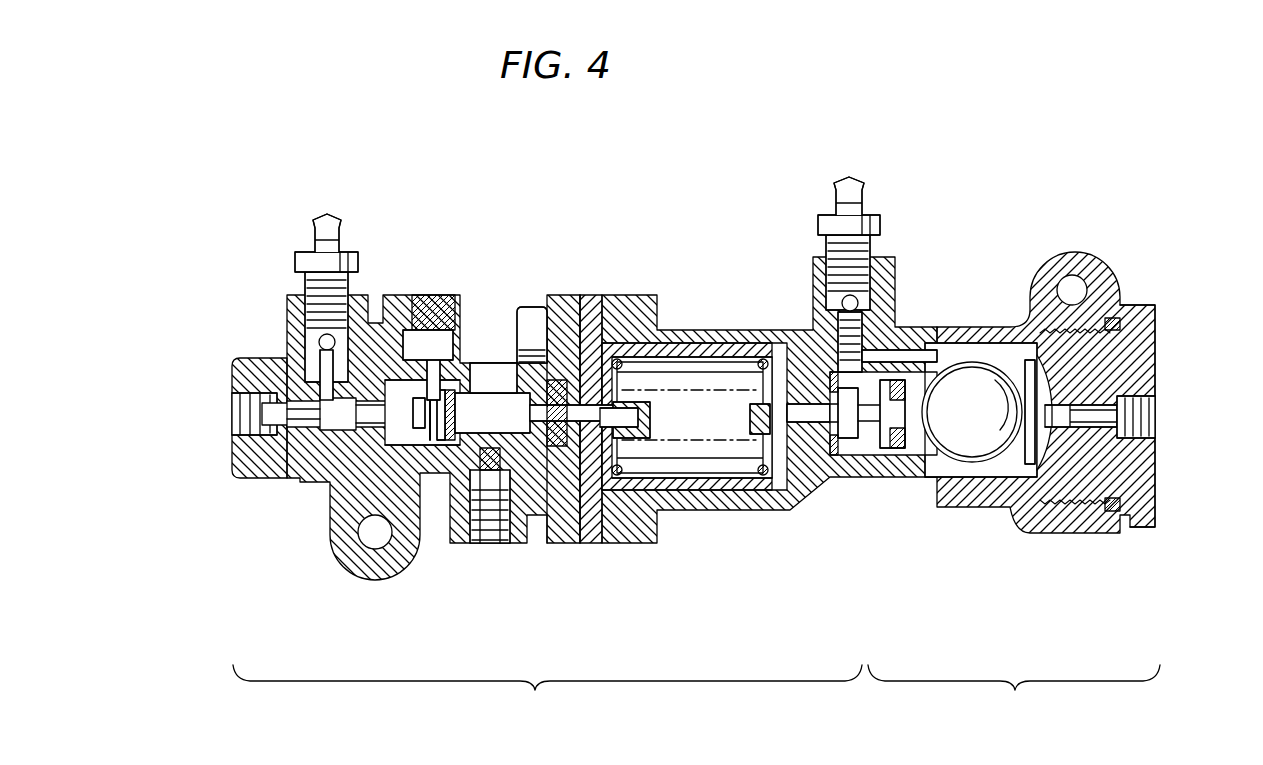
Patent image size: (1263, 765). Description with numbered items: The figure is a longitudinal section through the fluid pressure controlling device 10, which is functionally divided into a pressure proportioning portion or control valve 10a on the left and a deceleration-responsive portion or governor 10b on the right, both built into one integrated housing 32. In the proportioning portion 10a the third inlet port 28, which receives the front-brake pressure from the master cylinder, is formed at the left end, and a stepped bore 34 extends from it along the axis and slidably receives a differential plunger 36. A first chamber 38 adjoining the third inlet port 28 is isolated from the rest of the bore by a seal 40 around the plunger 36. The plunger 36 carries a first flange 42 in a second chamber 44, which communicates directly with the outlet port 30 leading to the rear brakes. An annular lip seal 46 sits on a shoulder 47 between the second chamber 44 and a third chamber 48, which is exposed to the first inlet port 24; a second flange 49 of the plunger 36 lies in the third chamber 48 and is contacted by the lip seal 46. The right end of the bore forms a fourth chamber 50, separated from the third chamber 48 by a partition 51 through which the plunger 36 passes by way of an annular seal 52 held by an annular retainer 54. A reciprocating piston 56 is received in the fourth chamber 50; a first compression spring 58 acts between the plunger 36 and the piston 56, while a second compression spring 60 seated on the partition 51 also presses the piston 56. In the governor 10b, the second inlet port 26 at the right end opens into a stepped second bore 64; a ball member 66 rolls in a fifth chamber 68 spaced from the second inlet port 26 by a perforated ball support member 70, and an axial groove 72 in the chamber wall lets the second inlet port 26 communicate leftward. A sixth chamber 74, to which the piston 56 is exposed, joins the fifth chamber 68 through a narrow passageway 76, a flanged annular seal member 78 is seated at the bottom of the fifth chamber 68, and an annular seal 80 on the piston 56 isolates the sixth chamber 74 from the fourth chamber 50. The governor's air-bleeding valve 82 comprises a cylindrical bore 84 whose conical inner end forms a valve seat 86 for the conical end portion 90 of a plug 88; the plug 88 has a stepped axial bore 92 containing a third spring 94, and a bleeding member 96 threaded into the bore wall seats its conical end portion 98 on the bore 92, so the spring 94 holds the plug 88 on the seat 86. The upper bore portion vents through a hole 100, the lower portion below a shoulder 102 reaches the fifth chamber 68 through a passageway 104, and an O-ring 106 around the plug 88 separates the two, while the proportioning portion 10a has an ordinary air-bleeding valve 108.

The fluid pressure controlling device 10 is at (717, 384).
The pressure proportioning portion 10a is at (547, 698).
The deceleration-responsive portion 10b is at (1014, 695).
The first inlet port 24 is at (495, 543).
The second inlet port 26 is at (1115, 400).
The third inlet port 28 is at (250, 404).
The outlet port 30 is at (425, 300).
The housing 32 is at (565, 300).
The stepped bore 34 is at (478, 390).
The differential plunger 36 is at (537, 413).
The first chamber 38 is at (330, 490).
The seal 40 is at (340, 430).
The first flange 42 is at (432, 445).
The second chamber 44 is at (378, 330).
The annular lip seal 46 is at (450, 445).
The shoulder 47 is at (447, 390).
The third chamber 48 is at (482, 380).
The second flange 49 is at (420, 445).
The fourth chamber 50 is at (725, 458).
The partition 51 is at (595, 543).
The annular seal 52 is at (562, 543).
The annular retainer 54 is at (552, 446).
The piston 56 is at (762, 357).
The first compression spring 58 is at (670, 442).
The second compression spring 60 is at (662, 362).
The second bore 64 is at (930, 477).
The ball member 66 is at (985, 462).
The fifth chamber 68 is at (1028, 465).
The ball support member 70 is at (1035, 440).
The axial groove 72 is at (1003, 350).
The sixth chamber 74 is at (850, 440).
The passageway 76 is at (888, 450).
The flanged annular seal member 78 is at (898, 448).
The annular seal 80 is at (833, 455).
The air-bleeding valve 82 is at (822, 250).
The cylindrical bore 84 is at (872, 290).
The valve seat 86 is at (807, 406).
The plug 88 is at (836, 300).
The conical end portion 90 is at (912, 380).
The stepped axial bore 92 is at (875, 340).
The third spring 94 is at (812, 320).
The bleeding member 96 is at (862, 185).
The conical end portion 98 is at (826, 300).
The hole 100 is at (865, 250).
The shoulder 102 is at (895, 350).
The passageway 104 is at (925, 360).
The O-ring 106 is at (745, 378).
The air-bleeding valve 108 is at (315, 240).